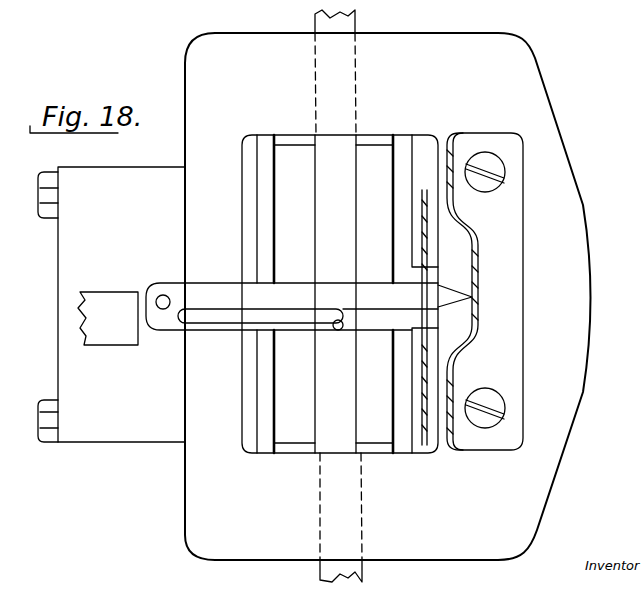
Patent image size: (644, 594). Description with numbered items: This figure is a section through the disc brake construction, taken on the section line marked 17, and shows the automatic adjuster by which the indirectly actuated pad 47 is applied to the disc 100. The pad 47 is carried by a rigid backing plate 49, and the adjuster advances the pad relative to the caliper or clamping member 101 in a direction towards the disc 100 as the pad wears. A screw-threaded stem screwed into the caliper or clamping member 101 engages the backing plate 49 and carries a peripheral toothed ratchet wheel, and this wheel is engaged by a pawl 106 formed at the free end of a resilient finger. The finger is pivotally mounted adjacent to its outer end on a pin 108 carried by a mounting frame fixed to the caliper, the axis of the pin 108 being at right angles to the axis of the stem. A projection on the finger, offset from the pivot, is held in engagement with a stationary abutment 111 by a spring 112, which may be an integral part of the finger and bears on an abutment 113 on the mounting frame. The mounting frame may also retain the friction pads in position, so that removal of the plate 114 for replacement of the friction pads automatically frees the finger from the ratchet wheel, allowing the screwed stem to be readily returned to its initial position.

The disc 100 is at (317, 25).
The caliper or clamping member 101 is at (403, 537).
The pawl 106 is at (443, 297).
The pin 108 is at (158, 292).
The stationary abutment 111 is at (108, 345).
The spring 112 is at (252, 330).
The abutment 113 is at (338, 333).
The plate 114 is at (485, 448).
The indirectly actuated pad 47 is at (374, 428).
The rigid backing plate 49 is at (404, 430).
The section line 17- 17 is at (40, 252).